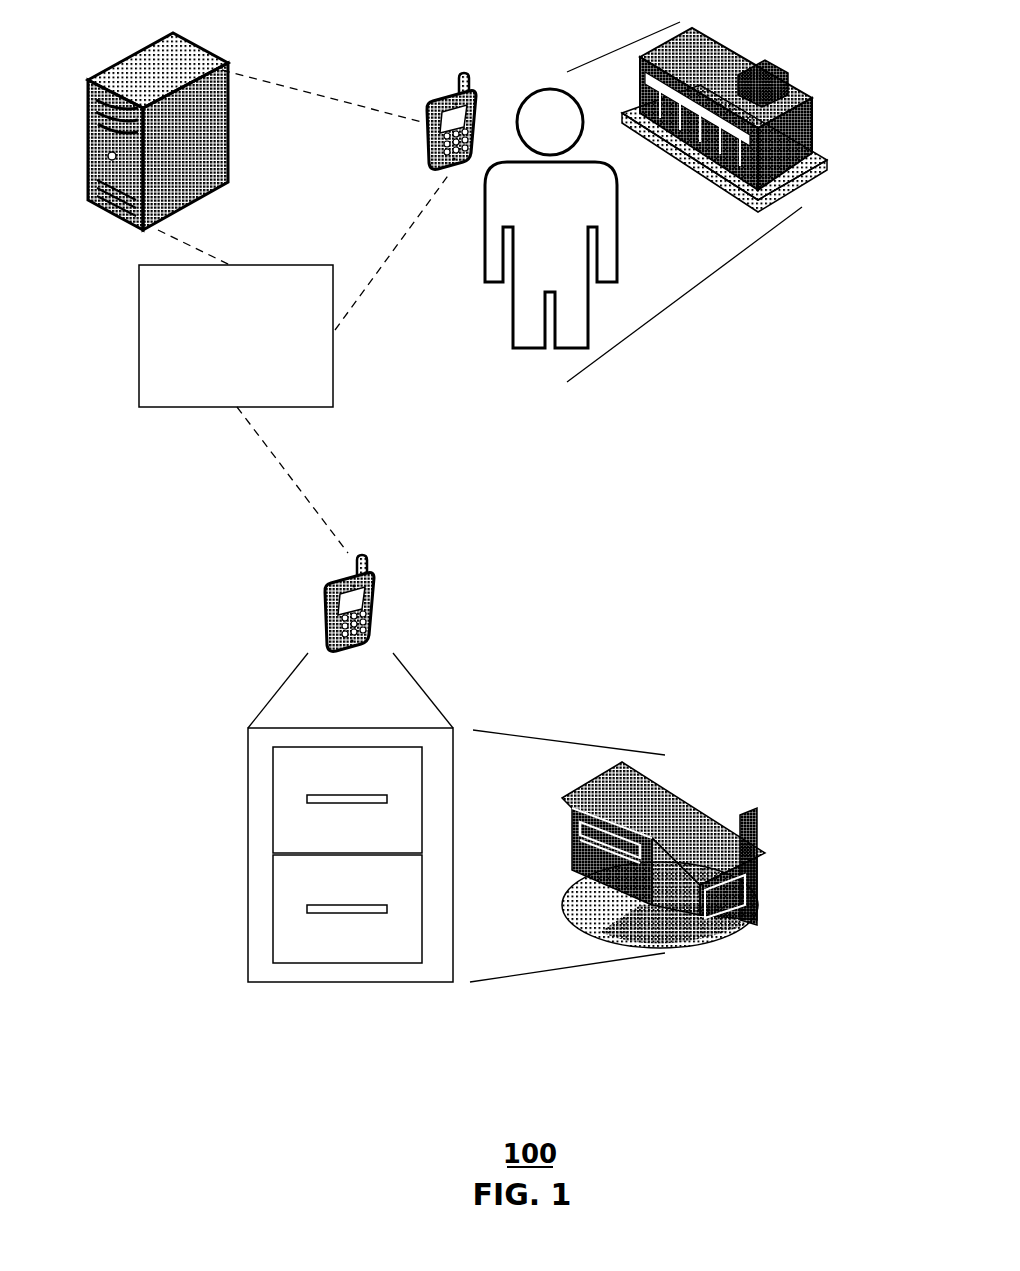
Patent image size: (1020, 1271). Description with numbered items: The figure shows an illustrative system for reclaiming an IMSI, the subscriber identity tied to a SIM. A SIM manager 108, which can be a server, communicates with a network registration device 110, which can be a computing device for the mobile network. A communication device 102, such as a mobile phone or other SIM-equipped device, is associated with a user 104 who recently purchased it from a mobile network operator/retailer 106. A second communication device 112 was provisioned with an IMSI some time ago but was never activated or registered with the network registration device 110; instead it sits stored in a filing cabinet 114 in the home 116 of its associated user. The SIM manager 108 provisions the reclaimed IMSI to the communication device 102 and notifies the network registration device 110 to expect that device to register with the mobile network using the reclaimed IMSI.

The communication device 102 is at (422, 137).
The user 104 is at (508, 315).
The mobile network operator/retailer 106 is at (823, 123).
The SIM manager 108 is at (230, 107).
The network registration device 110 is at (135, 353).
The communication device 112 is at (325, 582).
The filing cabinet 114 is at (243, 957).
The home 116 is at (725, 940).